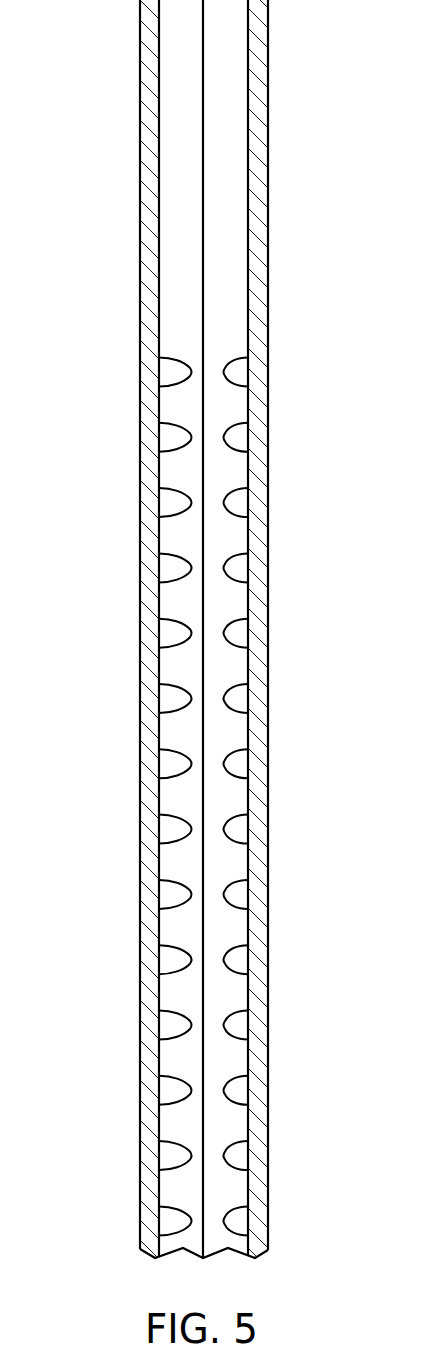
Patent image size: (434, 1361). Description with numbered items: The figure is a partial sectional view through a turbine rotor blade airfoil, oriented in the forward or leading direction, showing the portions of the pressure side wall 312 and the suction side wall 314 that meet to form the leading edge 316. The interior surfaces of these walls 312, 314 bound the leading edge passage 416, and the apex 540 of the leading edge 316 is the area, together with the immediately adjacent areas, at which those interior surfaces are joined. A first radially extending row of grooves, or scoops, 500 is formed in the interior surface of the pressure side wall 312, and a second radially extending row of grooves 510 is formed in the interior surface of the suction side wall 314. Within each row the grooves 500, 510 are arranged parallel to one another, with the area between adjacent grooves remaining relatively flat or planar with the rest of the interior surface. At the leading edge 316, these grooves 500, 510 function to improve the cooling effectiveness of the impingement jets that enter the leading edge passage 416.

The pressure side wall 312 is at (145, 667).
The suction side wall 314 is at (262, 605).
The leading edge 316 is at (143, 864).
The leading edge passage 416 is at (162, 733).
The first radially extending row of grooves 500 is at (148, 568).
The second radially extending row of grooves 510 is at (243, 435).
The apex 540 is at (204, 239).